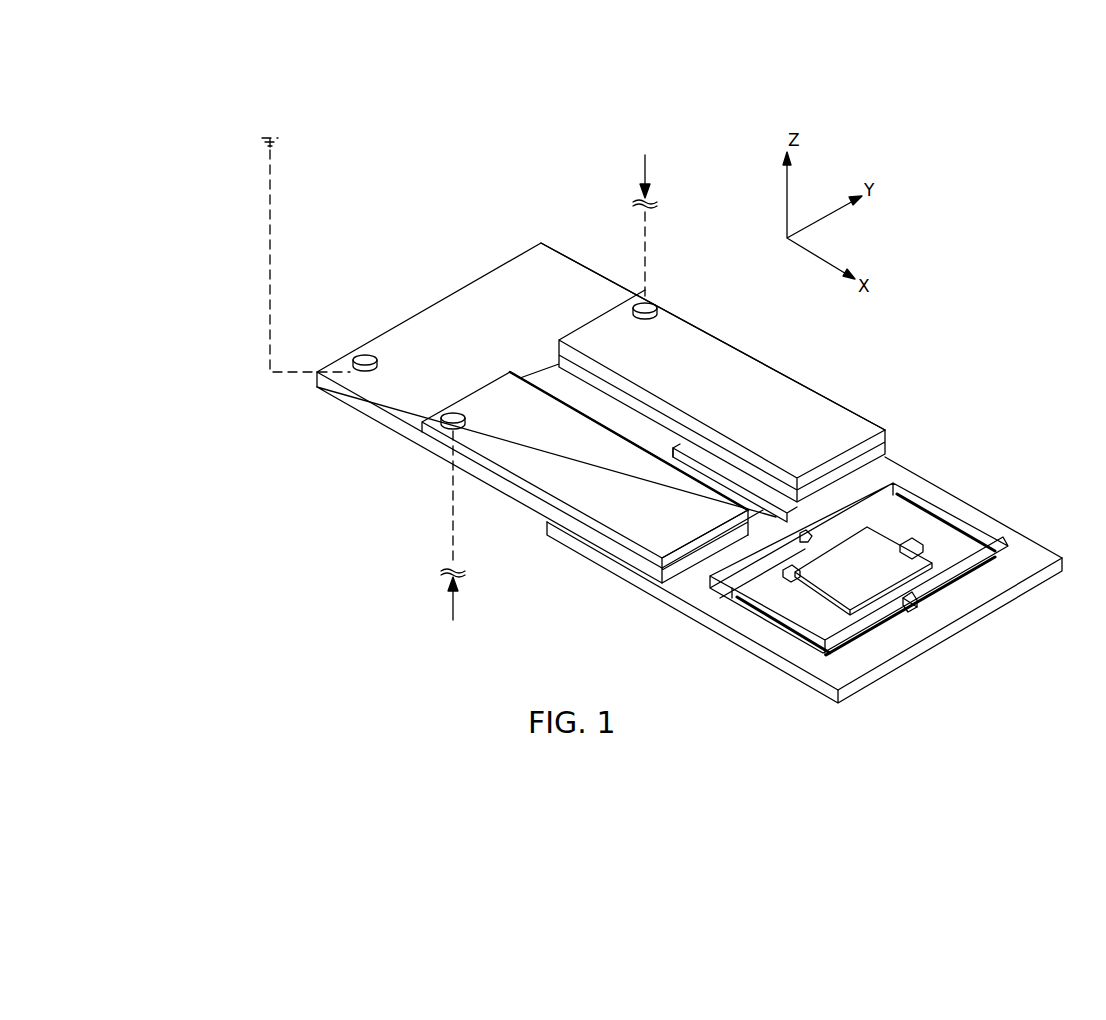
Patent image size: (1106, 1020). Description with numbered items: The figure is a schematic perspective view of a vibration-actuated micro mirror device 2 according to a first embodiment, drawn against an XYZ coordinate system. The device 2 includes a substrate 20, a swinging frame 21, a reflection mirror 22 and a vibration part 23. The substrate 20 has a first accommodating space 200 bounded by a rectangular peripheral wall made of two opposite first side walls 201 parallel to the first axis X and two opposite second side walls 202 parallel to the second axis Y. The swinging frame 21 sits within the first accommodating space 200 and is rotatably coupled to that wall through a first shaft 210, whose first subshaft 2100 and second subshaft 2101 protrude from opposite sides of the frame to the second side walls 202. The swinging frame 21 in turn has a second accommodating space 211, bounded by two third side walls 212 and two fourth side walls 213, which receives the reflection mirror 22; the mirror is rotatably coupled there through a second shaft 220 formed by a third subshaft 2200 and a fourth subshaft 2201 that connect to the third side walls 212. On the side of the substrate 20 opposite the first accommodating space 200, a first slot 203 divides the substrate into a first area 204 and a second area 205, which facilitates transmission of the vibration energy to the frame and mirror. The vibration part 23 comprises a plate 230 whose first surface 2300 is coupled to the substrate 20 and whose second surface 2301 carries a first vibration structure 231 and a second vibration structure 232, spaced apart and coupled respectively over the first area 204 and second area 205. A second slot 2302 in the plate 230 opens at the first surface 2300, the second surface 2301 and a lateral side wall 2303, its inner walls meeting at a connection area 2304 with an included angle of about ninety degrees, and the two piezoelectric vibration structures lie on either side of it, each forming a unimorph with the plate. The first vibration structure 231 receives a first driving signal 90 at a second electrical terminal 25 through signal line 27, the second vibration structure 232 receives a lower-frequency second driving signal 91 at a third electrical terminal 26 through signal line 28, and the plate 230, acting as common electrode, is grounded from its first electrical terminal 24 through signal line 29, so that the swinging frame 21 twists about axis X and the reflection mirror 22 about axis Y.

The vibration-actuated micro mirror device 2 is at (495, 188).
The substrate 20 is at (807, 557).
The swinging frame 21 is at (836, 622).
The reflection mirror 22 is at (870, 563).
The vibration part 23 is at (587, 427).
The first electrical terminal 24 is at (372, 358).
The second electrical terminal 25 is at (652, 305).
The third electrical terminal 26 is at (465, 420).
The signal line 27 is at (650, 236).
The signal line 28 is at (450, 505).
The signal line 29 is at (266, 266).
The first driving signal 90 is at (644, 169).
The second driving signal 91 is at (453, 606).
The first accommodating space 200 is at (1005, 558).
The first side wall 201 is at (990, 535).
The second side wall 202 is at (775, 560).
The first slot 203 is at (700, 473).
The first area 204 is at (674, 446).
The second area 205 is at (692, 470).
The first shaft 210 is at (824, 643).
The second accommodating space 211 is at (917, 605).
The third side wall 212 is at (920, 552).
The fourth side wall 213 is at (787, 580).
The second shaft 220 is at (866, 506).
The plate 230 is at (478, 290).
The first vibration structure 231 is at (712, 333).
The second vibration structure 232 is at (515, 455).
The first subshaft 2100 is at (800, 542).
The second subshaft 2101 is at (907, 605).
The third subshaft 2200 is at (818, 588).
The fourth subshaft 2201 is at (897, 540).
The first surface 2300 is at (395, 433).
The second surface 2301 is at (373, 398).
The second slot 2302 is at (557, 390).
The lateral side wall 2303 is at (715, 546).
The connection area 2304 is at (565, 345).